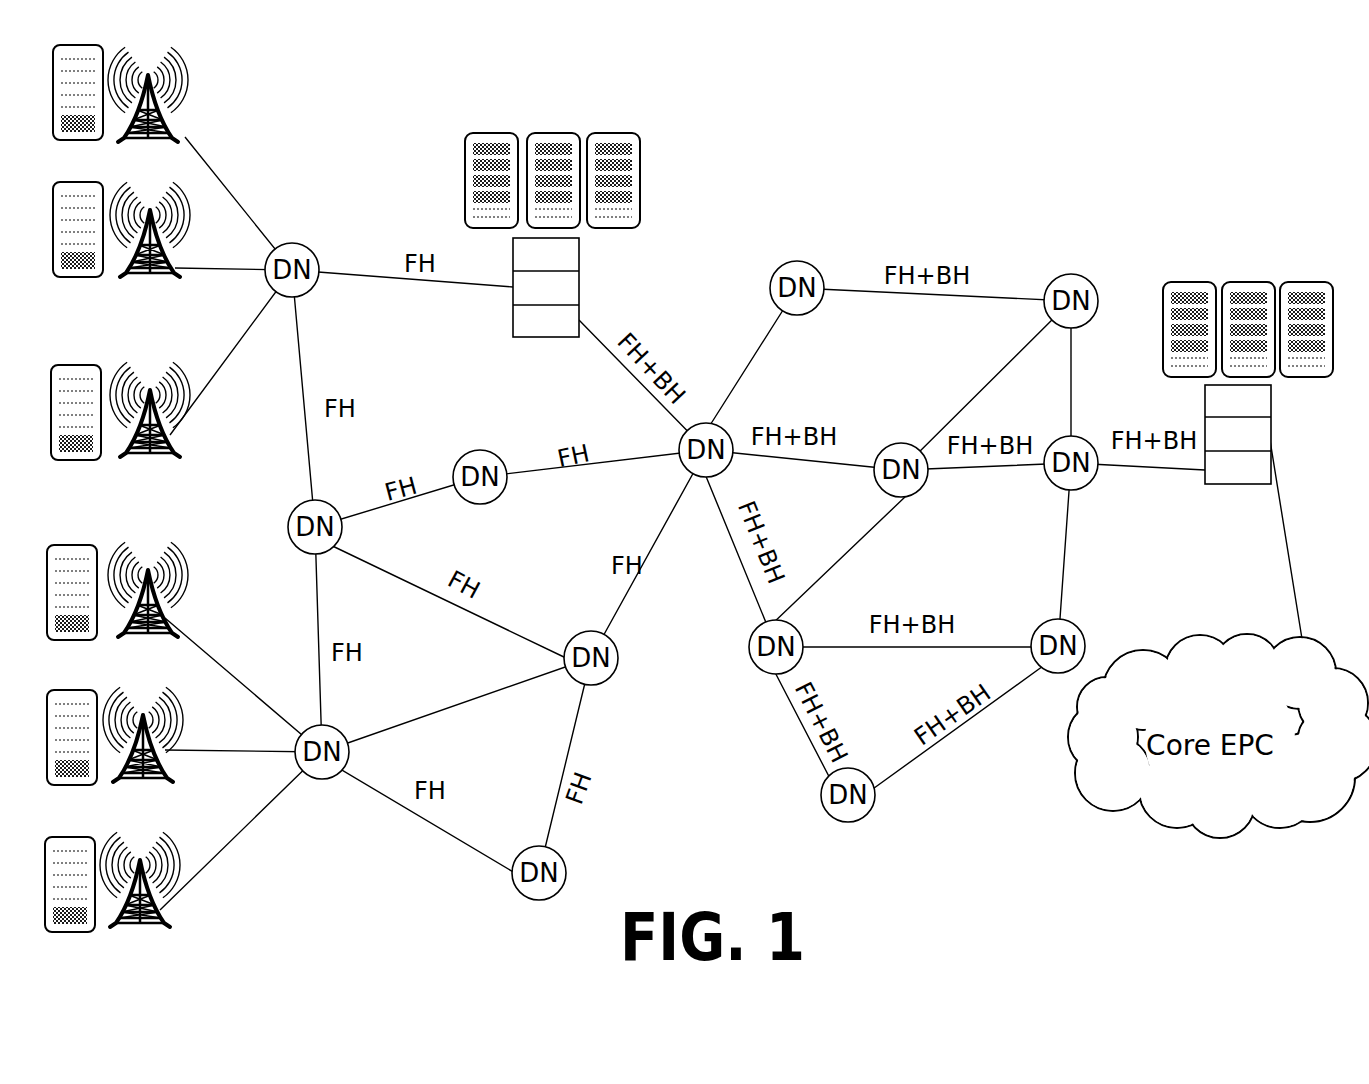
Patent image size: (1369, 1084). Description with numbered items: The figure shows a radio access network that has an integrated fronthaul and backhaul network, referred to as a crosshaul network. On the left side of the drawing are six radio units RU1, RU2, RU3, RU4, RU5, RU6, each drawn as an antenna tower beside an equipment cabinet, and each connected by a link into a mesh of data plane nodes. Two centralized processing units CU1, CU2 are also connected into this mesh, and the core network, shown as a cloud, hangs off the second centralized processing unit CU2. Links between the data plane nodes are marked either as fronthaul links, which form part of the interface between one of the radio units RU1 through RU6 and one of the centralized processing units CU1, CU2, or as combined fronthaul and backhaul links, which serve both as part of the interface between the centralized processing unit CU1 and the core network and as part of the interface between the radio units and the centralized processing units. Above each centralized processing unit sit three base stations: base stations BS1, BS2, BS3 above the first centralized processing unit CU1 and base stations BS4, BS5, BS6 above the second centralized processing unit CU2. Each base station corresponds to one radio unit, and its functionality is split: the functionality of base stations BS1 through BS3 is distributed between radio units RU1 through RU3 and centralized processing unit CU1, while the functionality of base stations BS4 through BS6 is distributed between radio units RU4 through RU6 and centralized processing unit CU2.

The radio unit RU1 is at (120, 109).
The radio unit RU2 is at (121, 246).
The radio unit RU3 is at (120, 424).
The radio unit RU4 is at (117, 601).
The radio unit RU5 is at (115, 748).
The radio unit RU6 is at (112, 893).
The base station BS1 is at (491, 165).
The base station BS2 is at (553, 165).
The base station BS3 is at (613, 165).
The base station BS4 is at (1189, 314).
The base station BS5 is at (1248, 314).
The base station BS6 is at (1306, 314).
The centralized processing unit CU1 is at (546, 308).
The centralized processing unit CU2 is at (1238, 457).